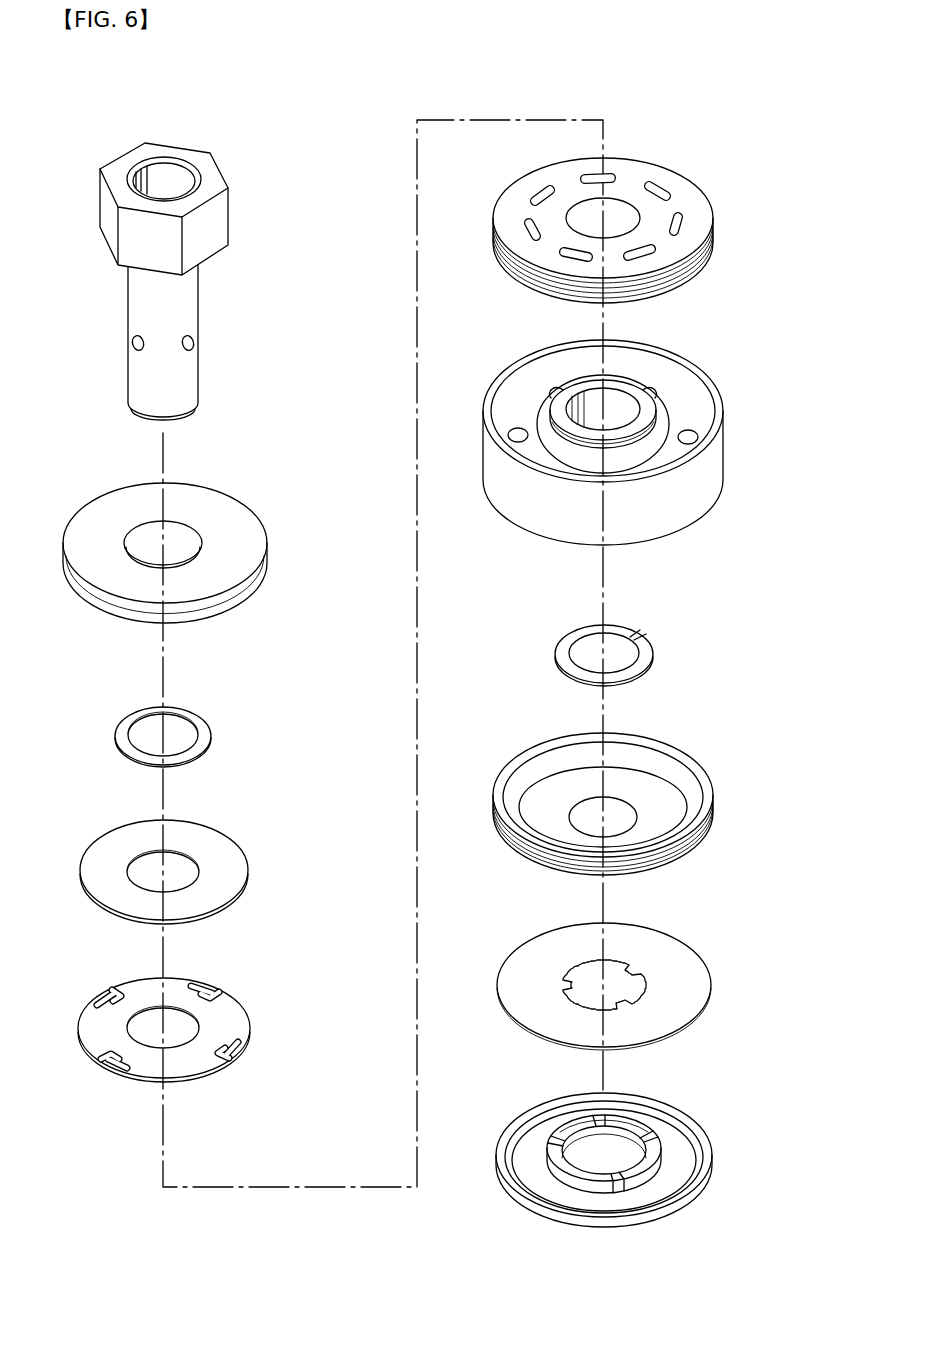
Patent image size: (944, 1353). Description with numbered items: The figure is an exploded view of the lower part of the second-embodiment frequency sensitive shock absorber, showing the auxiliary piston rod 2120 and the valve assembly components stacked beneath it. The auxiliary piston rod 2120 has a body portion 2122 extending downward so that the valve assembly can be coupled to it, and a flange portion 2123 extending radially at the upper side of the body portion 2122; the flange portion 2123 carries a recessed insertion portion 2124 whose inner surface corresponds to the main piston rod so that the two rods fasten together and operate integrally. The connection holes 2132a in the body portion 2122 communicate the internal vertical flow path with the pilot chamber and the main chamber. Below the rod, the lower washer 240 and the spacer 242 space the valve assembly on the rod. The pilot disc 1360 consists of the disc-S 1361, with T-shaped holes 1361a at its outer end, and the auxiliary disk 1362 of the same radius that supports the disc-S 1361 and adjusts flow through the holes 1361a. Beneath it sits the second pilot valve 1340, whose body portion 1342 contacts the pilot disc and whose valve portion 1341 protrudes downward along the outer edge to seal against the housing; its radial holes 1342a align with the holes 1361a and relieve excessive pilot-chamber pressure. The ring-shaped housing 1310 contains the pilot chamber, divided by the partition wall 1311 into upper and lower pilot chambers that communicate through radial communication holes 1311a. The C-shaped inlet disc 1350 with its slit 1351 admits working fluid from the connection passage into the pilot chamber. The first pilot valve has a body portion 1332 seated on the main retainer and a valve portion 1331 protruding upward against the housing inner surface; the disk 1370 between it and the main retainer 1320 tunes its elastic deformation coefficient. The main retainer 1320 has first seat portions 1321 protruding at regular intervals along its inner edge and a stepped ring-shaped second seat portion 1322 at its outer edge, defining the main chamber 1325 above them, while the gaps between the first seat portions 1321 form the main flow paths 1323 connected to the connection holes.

The auxiliary piston rod 2120 is at (262, 186).
The body portion 2122 is at (188, 308).
The flange portion 2123 is at (212, 227).
The insertion portion 2124 is at (178, 175).
The connection holes 2132a is at (193, 343).
The lower washer 240 is at (255, 537).
The spacer 242 is at (253, 735).
The pilot disc 1360 is at (333, 1054).
The auxiliary disk 1362 is at (238, 872).
The disc-S 1361 is at (236, 1018).
The holes 1361a is at (232, 1052).
The second pilot valve 1340 is at (785, 197).
The body portion 1342 is at (693, 199).
The holes 1342a is at (683, 218).
The valve portion 1341 is at (690, 272).
The housing 1310 is at (706, 376).
The partition wall 1311 is at (683, 413).
The communication holes 1311a is at (692, 438).
The inlet disc 1350 is at (643, 640).
The slit 1351 is at (631, 632).
The valve portion 1331 is at (705, 781).
The body portion 1332 is at (670, 824).
The disk 1370 is at (700, 970).
The main retainer 1320 is at (740, 1135).
The second seat portion 1322 is at (692, 1113).
The first seat portions 1321 is at (652, 1148).
The main chamber 1325 is at (635, 1118).
The main flow paths 1323 is at (657, 1153).